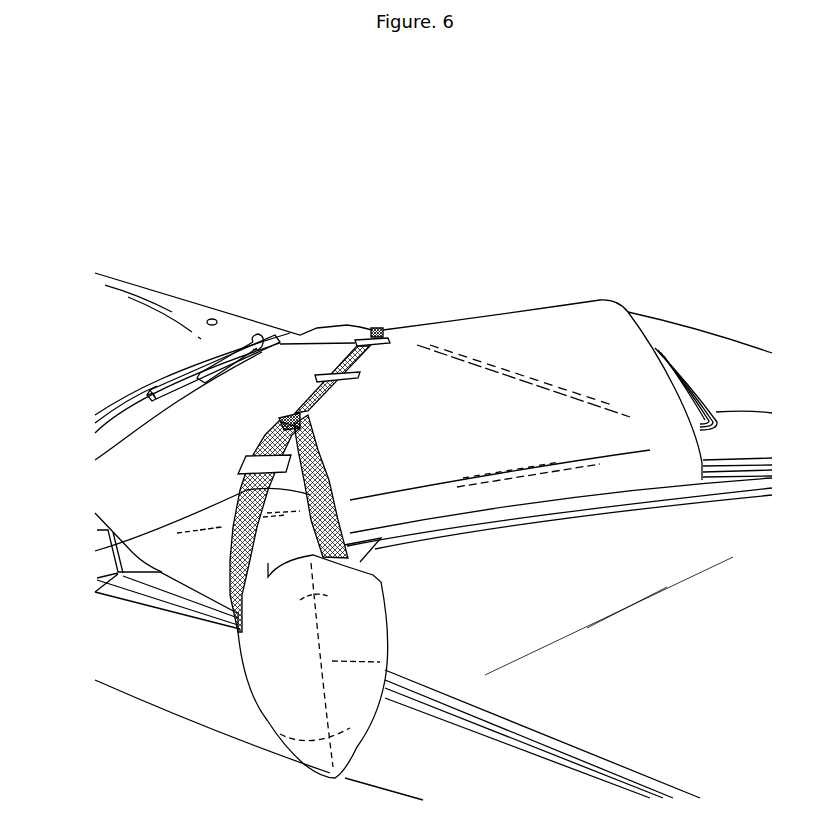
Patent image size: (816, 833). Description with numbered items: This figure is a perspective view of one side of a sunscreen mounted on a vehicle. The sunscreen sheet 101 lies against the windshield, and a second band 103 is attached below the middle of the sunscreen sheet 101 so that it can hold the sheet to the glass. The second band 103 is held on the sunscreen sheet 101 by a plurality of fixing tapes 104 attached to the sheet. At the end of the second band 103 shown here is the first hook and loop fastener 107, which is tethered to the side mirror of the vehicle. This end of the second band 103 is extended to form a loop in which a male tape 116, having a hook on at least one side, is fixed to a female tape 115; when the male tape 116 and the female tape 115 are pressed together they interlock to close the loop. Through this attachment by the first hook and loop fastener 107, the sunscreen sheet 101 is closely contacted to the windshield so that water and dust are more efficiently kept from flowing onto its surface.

The sunscreen sheet 101 is at (627, 353).
The second band 103 is at (310, 395).
The fixing tapes 104 is at (360, 376).
The first hook and loop fastener 107 is at (120, 555).
The female tape 115 is at (300, 421).
The male tape 116 is at (332, 470).